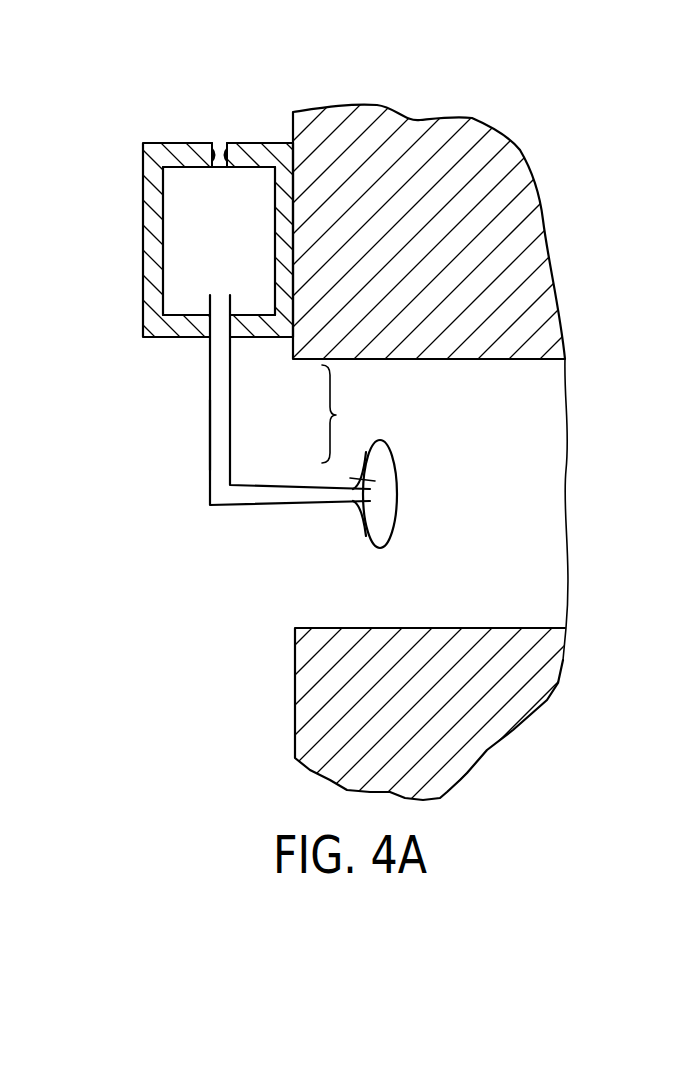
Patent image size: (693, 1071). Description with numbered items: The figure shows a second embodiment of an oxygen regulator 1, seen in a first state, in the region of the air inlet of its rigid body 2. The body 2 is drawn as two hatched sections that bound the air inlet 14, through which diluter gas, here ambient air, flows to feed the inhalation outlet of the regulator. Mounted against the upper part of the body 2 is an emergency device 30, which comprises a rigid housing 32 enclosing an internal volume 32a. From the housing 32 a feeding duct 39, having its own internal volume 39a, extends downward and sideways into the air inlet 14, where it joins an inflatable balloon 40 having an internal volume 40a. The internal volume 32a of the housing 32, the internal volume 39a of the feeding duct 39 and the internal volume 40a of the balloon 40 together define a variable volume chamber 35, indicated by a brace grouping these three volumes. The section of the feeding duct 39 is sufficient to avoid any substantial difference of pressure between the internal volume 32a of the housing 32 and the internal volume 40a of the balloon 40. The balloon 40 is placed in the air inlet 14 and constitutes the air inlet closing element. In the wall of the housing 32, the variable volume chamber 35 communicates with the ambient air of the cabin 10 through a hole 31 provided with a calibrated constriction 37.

The regulator 1 is at (222, 775).
The rigid body 2 is at (388, 130).
The cabin 10 is at (117, 590).
The air inlet 14 is at (538, 455).
The emergency device 30 is at (98, 205).
The hole 31 is at (221, 145).
The rigid housing 32 is at (148, 258).
The internal volume of the housing 32a is at (190, 208).
The variable volume chamber 35 is at (347, 414).
The calibrated constriction 37 is at (232, 148).
The feeding duct 39 is at (210, 462).
The internal volume of the feeding duct 39a is at (222, 435).
The inflatable balloon 40 is at (365, 540).
The internal volume of the balloon 40a is at (350, 478).